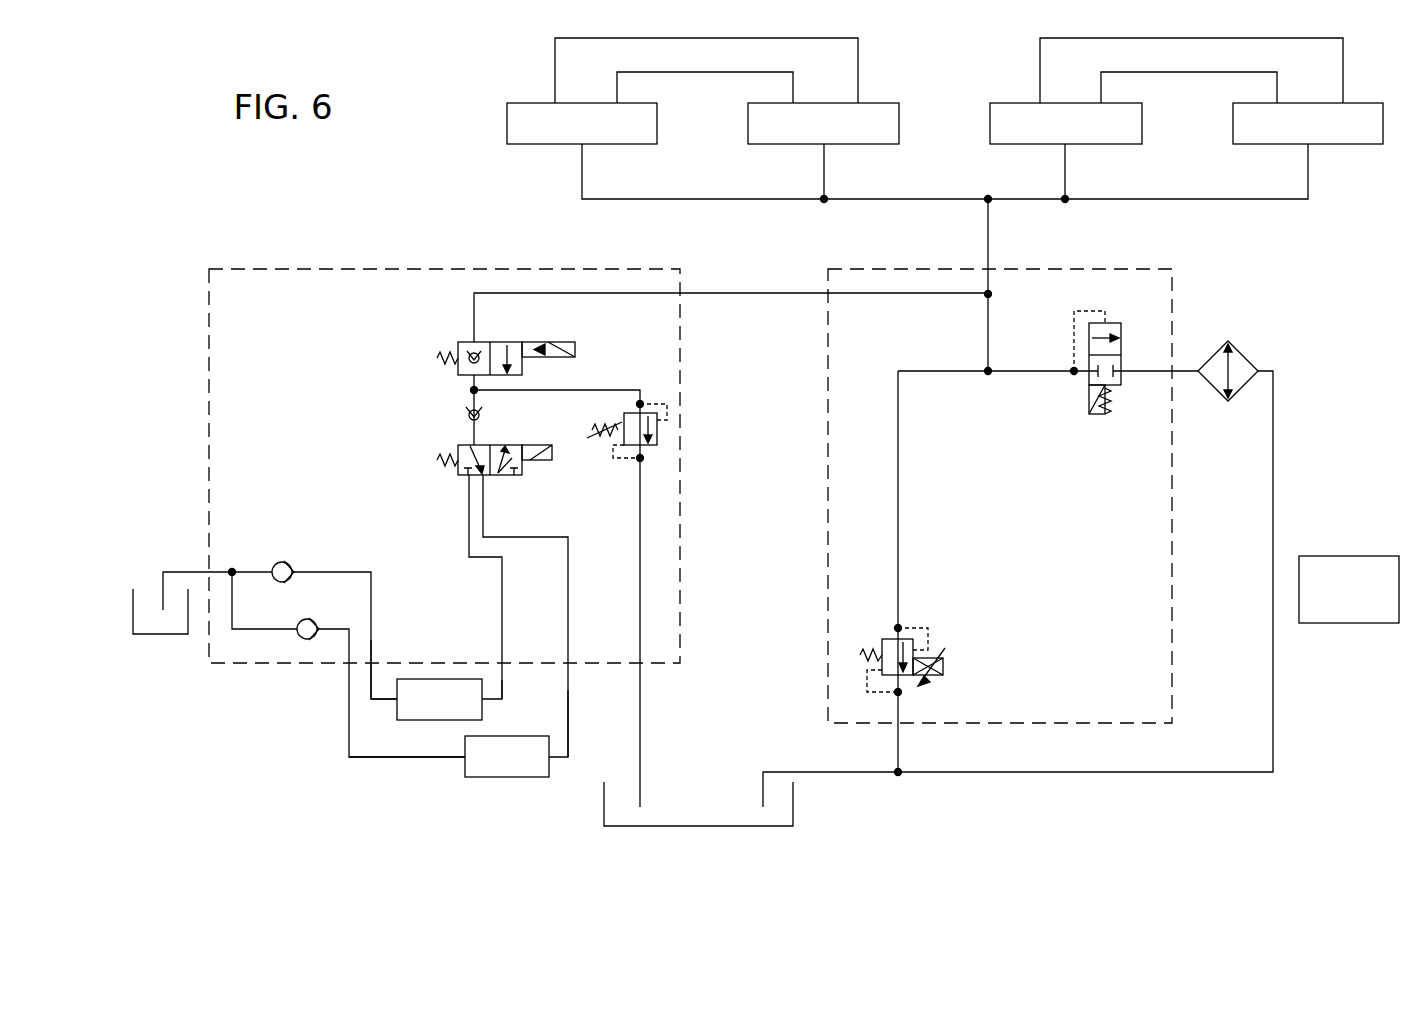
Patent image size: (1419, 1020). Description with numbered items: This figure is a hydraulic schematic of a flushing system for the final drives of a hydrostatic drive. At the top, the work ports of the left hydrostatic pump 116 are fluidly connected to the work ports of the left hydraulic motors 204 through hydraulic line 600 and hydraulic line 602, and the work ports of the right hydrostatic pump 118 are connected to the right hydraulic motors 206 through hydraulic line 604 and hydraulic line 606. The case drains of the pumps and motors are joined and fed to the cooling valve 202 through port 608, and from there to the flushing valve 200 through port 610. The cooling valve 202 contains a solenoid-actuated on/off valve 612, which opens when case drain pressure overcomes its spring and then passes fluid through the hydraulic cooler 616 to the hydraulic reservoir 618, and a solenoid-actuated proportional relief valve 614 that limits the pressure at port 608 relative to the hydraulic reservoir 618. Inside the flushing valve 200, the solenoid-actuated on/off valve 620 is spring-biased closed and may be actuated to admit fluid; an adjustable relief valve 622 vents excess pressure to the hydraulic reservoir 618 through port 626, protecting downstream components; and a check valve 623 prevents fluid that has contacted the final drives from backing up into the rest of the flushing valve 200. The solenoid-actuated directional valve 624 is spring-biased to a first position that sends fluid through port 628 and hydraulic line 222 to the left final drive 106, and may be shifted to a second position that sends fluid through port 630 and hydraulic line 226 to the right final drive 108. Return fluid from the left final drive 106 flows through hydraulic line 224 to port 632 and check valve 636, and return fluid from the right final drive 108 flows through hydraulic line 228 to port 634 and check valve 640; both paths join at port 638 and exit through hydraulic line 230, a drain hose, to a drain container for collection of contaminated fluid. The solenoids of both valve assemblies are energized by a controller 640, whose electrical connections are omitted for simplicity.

The left final drive 106 is at (507, 756).
The right final drive 108 is at (439, 699).
The left hydrostatic pump 116 is at (582, 123).
The right hydrostatic pump 118 is at (1066, 123).
The flushing valve 200 is at (523, 268).
The cooling valve 202 is at (1172, 312).
The left hydraulic motors 204 is at (147, 637).
The right hydraulic motors 206 is at (1308, 123).
The hydraulic line 222 is at (571, 690).
The hydraulic line 224 is at (378, 760).
The hydraulic line 226 is at (504, 682).
The hydraulic line 228 is at (380, 700).
The hydraulic line 230 is at (183, 570).
The hydraulic line 600 is at (555, 60).
The hydraulic line 602 is at (697, 72).
The hydraulic line 604 is at (1040, 62).
The hydraulic line 606 is at (1175, 72).
The port 608 is at (985, 268).
The port 610 is at (680, 295).
The solenoid-actuated on/off valve 612 is at (1115, 322).
The solenoid-actuated proportional relief valve 614 is at (885, 640).
The hydraulic cooler 616 is at (1245, 352).
The hydraulic reservoir 618 is at (793, 812).
The solenoid-actuated on/off valve 620 is at (458, 342).
The adjustable relief valve 622 is at (660, 405).
The check valve 623 is at (468, 408).
The solenoid-actuated directional valve 624 is at (458, 445).
The port 626 is at (640, 660).
The port 628 is at (567, 660).
The port 630 is at (500, 660).
The port 632 is at (349, 665).
The port 634 is at (372, 665).
The check valve 636 is at (300, 645).
The port 638 is at (210, 570).
The check valve 640 is at (282, 560).